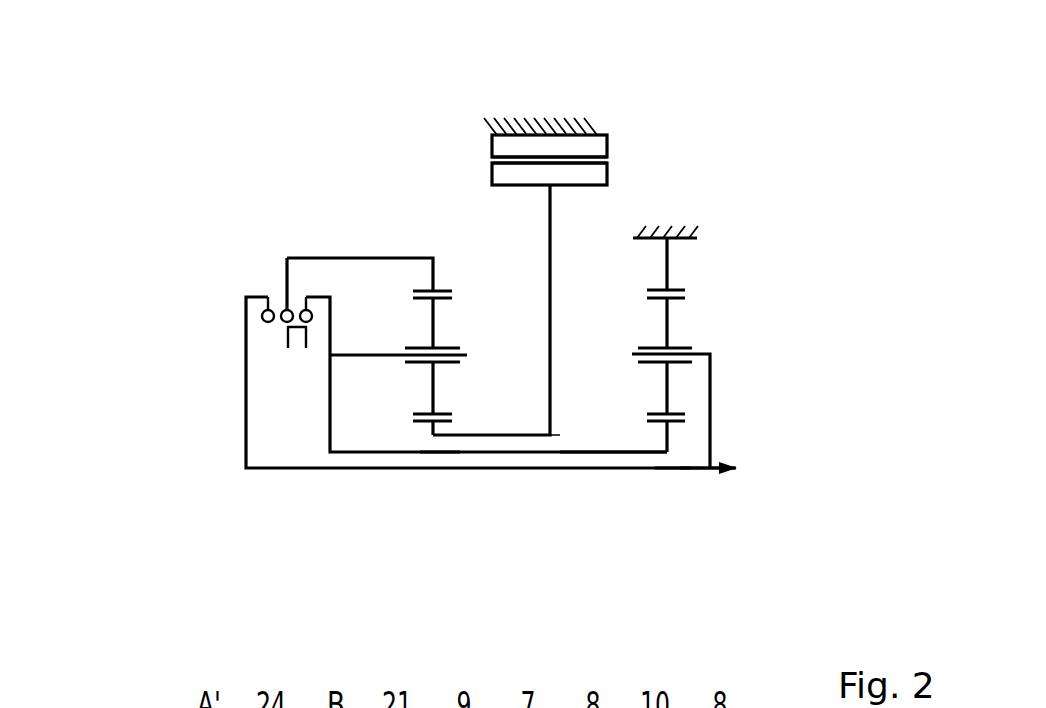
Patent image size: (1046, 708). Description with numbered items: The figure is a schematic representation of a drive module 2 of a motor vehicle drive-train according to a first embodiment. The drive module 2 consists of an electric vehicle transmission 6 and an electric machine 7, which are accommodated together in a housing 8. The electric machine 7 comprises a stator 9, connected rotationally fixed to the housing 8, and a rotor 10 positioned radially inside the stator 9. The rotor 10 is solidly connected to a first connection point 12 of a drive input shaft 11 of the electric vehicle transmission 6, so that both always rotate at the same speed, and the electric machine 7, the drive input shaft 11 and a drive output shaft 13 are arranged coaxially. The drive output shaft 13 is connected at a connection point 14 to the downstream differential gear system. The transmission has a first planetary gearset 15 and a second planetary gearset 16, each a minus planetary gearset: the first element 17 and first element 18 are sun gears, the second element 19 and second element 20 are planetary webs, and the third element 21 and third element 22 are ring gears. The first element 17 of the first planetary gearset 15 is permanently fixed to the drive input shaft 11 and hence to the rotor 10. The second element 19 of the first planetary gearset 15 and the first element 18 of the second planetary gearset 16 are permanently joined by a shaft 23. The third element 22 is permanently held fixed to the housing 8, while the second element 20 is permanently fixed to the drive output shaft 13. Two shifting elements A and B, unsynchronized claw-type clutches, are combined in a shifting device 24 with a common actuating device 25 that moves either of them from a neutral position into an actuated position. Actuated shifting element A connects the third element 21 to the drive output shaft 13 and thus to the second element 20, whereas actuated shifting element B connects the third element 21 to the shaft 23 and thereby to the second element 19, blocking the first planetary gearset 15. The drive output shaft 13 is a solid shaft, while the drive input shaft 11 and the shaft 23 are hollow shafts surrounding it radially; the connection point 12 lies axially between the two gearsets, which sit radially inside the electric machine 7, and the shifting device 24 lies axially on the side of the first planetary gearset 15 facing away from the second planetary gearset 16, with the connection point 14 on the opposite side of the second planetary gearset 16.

The drive module 2 is at (175, 135).
The electric vehicle transmission 6 is at (162, 187).
The shifting element A is at (273, 288).
The shifting element B is at (300, 292).
The shifting device 24 is at (280, 274).
The third element 21 is at (433, 282).
The stator 9 is at (503, 147).
The electric machine 7 is at (543, 108).
The housing 8 is at (577, 120).
The rotor 10 is at (597, 173).
The third element 22 is at (667, 263).
The second element 20 is at (710, 373).
The first element 18 is at (667, 435).
The connection point 14 is at (747, 460).
The actuating device 25 is at (287, 337).
The second element 19 is at (377, 355).
The first element 17 is at (433, 428).
The first planetary gearset 15 is at (439, 492).
The drive input shaft 11 is at (487, 436).
The first connection point 12 is at (547, 482).
The shaft 23 is at (632, 453).
The second planetary gearset 16 is at (673, 492).
The drive output shaft 13 is at (721, 470).